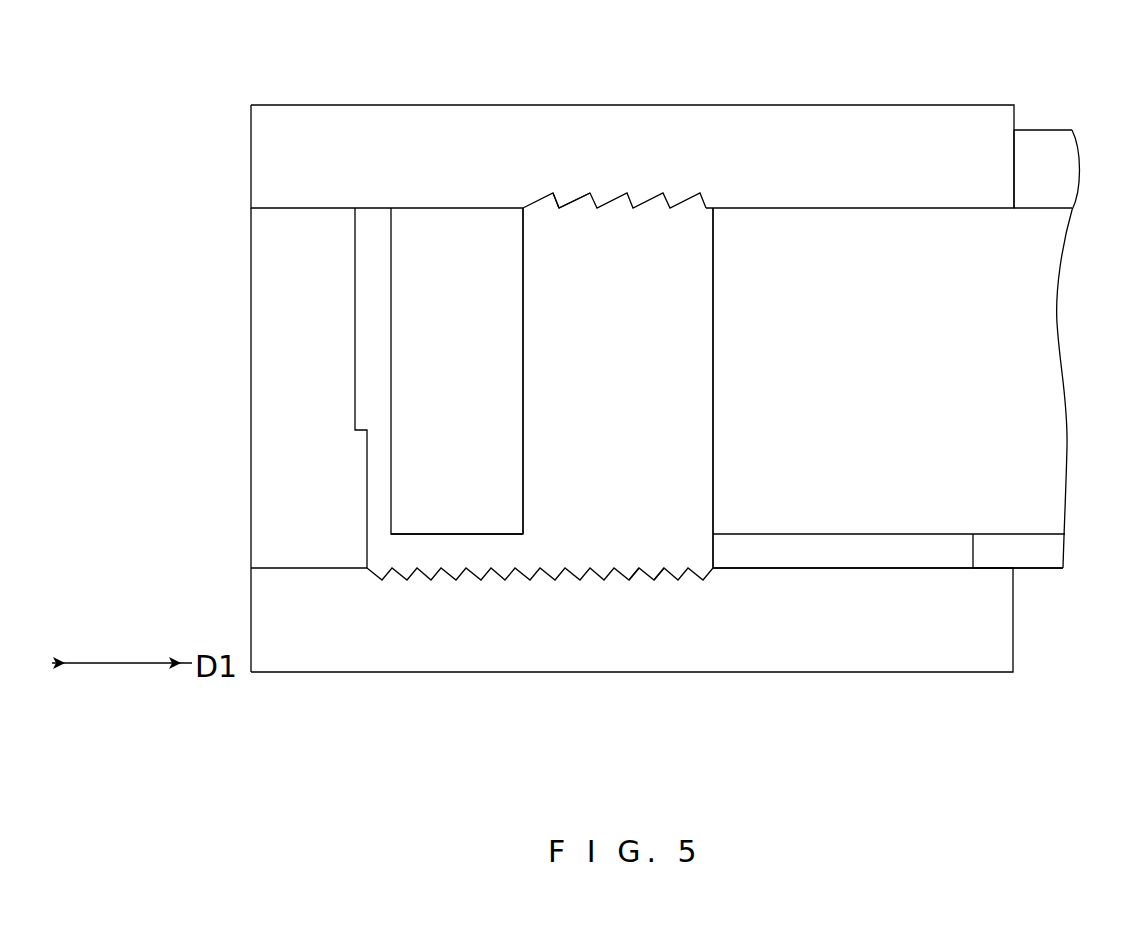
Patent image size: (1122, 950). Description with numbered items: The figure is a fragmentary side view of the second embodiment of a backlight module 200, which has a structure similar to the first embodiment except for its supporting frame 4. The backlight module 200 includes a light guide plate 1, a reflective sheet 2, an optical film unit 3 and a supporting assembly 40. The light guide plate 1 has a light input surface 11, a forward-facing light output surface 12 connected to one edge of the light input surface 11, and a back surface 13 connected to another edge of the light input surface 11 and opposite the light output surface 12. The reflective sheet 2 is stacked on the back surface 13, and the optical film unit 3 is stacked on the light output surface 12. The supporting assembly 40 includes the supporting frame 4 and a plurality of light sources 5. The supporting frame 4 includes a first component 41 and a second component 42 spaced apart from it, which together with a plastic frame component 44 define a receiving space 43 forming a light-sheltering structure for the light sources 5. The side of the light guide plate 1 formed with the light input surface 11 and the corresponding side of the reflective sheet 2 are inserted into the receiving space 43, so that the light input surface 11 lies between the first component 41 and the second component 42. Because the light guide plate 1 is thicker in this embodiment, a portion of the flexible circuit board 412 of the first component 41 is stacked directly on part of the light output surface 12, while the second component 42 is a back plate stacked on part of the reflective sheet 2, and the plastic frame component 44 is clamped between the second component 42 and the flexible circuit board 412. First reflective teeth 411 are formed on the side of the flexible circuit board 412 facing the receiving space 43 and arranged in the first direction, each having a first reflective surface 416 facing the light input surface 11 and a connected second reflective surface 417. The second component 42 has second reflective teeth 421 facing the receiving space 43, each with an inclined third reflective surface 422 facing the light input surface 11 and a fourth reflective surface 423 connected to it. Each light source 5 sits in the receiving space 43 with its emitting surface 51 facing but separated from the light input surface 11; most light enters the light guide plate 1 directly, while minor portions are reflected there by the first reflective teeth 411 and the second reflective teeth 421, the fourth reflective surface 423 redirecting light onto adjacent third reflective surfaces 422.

The backlight module 200 is at (165, 58).
The supporting assembly 40 is at (223, 160).
The supporting frame 4 is at (353, 685).
The first component 41 is at (612, 90).
The first reflective teeth 411 is at (574, 222).
The flexible circuit board 412 is at (467, 190).
The first reflective surface 416 is at (570, 202).
The second reflective surface 417 is at (558, 204).
The second component 42 is at (722, 640).
The second reflective teeth 421 is at (567, 574).
The third reflective surface 422 is at (660, 574).
The fourth reflective surface 423 is at (633, 572).
The receiving space 43 is at (641, 245).
The plastic frame component 44 is at (300, 430).
The light source 5 is at (450, 525).
The emitting surface 51 is at (523, 490).
The light guide plate 1 is at (1013, 487).
The light input surface 11 is at (713, 455).
The light output surface 12 is at (1055, 208).
The back surface 13 is at (973, 568).
The reflective sheet 2 is at (860, 550).
The optical film unit 3 is at (1041, 170).